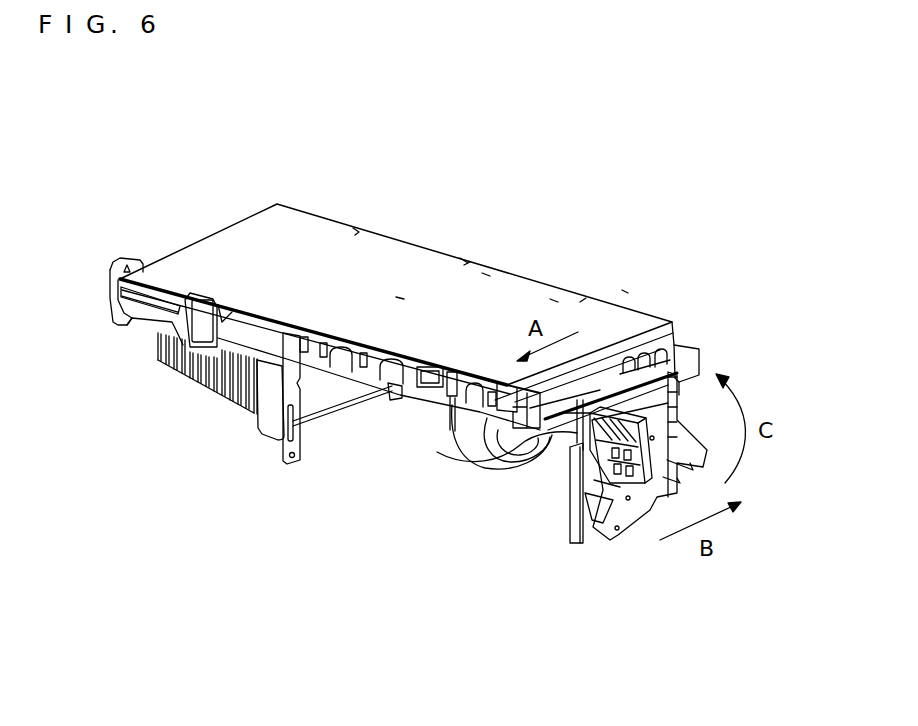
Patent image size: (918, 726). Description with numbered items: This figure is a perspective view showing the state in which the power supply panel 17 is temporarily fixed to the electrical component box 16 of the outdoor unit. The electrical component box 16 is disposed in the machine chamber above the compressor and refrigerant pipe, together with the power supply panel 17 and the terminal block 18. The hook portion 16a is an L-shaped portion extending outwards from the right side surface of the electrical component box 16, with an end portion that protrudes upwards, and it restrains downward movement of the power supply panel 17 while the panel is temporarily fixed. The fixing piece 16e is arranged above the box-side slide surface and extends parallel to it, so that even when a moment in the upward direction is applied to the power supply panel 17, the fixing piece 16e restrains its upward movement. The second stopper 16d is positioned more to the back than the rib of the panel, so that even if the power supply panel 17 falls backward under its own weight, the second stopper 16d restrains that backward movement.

The electrical component box 16 is at (435, 335).
The hook portion 16a is at (553, 432).
The second stopper 16d is at (680, 346).
The fixing piece 16e is at (646, 350).
The power supply panel 17 is at (567, 527).
The terminal block 18 is at (573, 450).